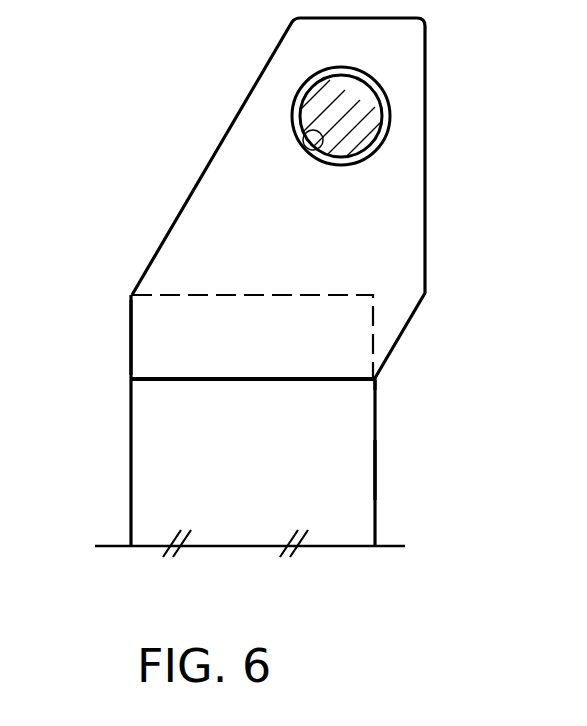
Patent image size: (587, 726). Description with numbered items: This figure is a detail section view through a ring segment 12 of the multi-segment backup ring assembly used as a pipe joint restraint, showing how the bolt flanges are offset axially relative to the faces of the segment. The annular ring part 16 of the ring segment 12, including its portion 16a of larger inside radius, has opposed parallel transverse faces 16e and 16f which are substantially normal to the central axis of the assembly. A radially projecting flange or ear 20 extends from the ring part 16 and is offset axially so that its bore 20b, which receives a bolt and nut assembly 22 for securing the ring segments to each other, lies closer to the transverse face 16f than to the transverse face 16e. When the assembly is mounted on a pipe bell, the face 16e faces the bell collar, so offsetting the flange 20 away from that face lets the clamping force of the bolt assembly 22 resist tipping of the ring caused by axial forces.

The ring segment 12 is at (385, 480).
The annular ring part 16 is at (131, 468).
The ring part portion 16a is at (177, 295).
The transverse face 16e is at (131, 328).
The transverse face 16f is at (375, 390).
The flange or ear 20 is at (425, 54).
The bore 20b is at (323, 153).
The bolt and nut assembly 22 is at (392, 112).